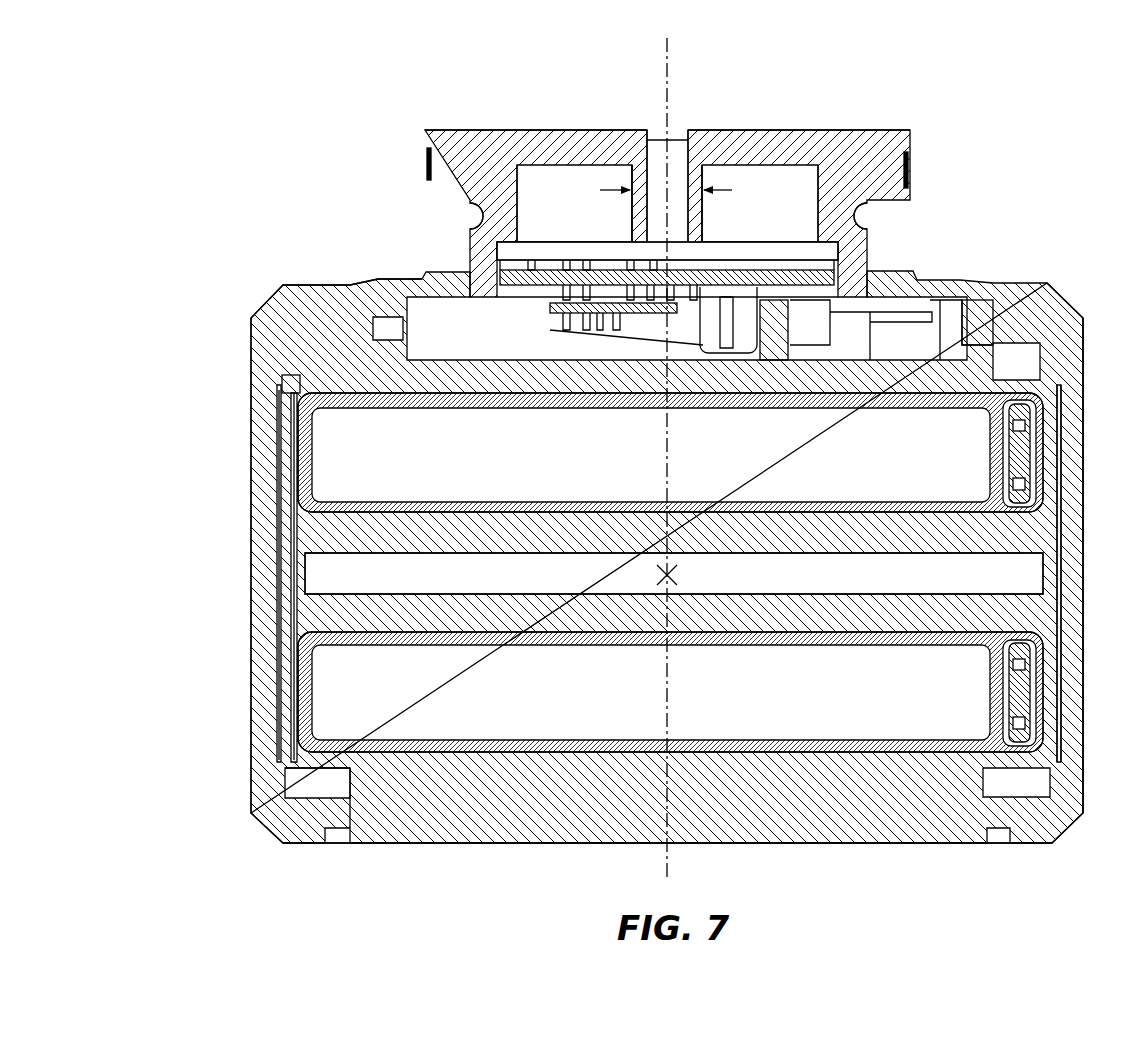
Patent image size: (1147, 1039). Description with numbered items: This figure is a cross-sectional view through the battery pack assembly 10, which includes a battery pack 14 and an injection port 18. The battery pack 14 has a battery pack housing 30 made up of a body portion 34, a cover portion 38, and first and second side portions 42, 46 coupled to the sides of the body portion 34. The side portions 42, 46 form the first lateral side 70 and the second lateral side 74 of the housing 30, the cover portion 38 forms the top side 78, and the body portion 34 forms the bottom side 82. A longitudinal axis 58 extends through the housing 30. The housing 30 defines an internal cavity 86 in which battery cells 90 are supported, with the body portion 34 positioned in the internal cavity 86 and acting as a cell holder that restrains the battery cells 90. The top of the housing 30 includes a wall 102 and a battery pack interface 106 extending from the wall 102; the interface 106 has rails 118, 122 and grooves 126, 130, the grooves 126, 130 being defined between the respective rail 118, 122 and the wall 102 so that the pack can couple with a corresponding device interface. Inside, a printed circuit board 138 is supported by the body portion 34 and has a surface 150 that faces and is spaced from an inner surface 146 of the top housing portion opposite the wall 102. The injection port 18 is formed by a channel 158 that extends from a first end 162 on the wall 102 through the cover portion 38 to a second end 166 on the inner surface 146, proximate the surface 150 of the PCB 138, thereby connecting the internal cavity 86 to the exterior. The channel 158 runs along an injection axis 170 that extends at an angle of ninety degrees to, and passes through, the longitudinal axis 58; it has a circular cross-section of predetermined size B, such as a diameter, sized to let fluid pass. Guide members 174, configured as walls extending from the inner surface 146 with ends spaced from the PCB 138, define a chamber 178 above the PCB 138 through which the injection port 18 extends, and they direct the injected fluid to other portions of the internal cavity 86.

The battery pack assembly 10 is at (227, 75).
The battery pack 14 is at (312, 85).
The injection port 18 is at (716, 140).
The battery pack housing 30 is at (988, 167).
The body portion 34 is at (553, 773).
The cover portion 38 is at (470, 147).
The first side portion 42 is at (1085, 692).
The second side portion 46 is at (252, 688).
The longitudinal axis 58 is at (668, 574).
The first lateral side 70 is at (1085, 455).
The second lateral side 74 is at (252, 418).
The top side 78 is at (790, 258).
The bottom side 82 is at (412, 843).
The internal cavity 86 is at (943, 378).
The battery cells 90 is at (924, 464).
The wall 102 is at (377, 279).
The battery pack interface 106 is at (530, 95).
The rail 118 is at (912, 137).
The rail 122 is at (423, 140).
The groove 126 is at (852, 226).
The groove 130 is at (486, 226).
The printed circuit board 138 is at (800, 270).
The inner surface 146 is at (545, 250).
The surface 150 is at (756, 242).
The channel 158 is at (645, 152).
The first end 162 is at (653, 132).
The second end 166 is at (662, 257).
The injection axis 170 is at (669, 64).
The guide members 174 is at (585, 222).
The chamber 178 is at (611, 246).
The predetermined size B is at (713, 192).